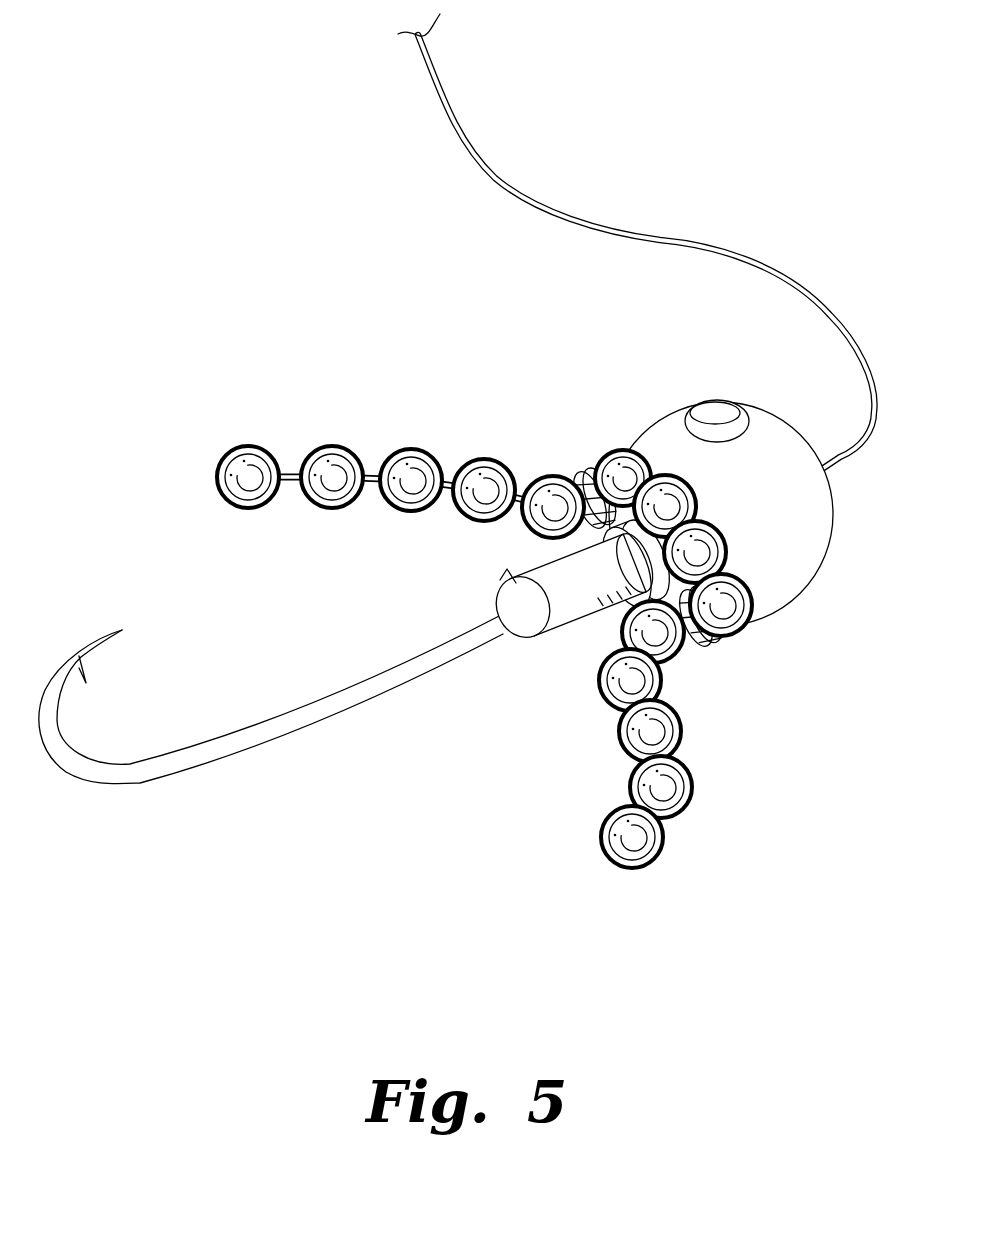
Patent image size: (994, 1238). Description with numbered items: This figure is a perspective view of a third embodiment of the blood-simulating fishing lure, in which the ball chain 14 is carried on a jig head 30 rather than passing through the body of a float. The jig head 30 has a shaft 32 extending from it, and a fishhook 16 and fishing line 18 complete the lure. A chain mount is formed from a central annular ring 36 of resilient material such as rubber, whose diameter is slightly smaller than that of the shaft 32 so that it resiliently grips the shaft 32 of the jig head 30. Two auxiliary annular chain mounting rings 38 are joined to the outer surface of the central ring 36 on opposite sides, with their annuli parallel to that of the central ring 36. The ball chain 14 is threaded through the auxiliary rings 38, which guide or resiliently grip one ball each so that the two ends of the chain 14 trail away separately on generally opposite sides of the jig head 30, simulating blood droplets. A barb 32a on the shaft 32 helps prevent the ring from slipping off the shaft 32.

The ball chain 14 is at (333, 444).
The fishhook 16 is at (220, 765).
The fishing line 18 is at (586, 221).
The jig head 30 is at (831, 546).
The shaft 32 is at (560, 560).
The barb 32a is at (510, 578).
The central annular ring 36 is at (592, 615).
The auxiliary annular chain mounting rings 38 is at (570, 470).